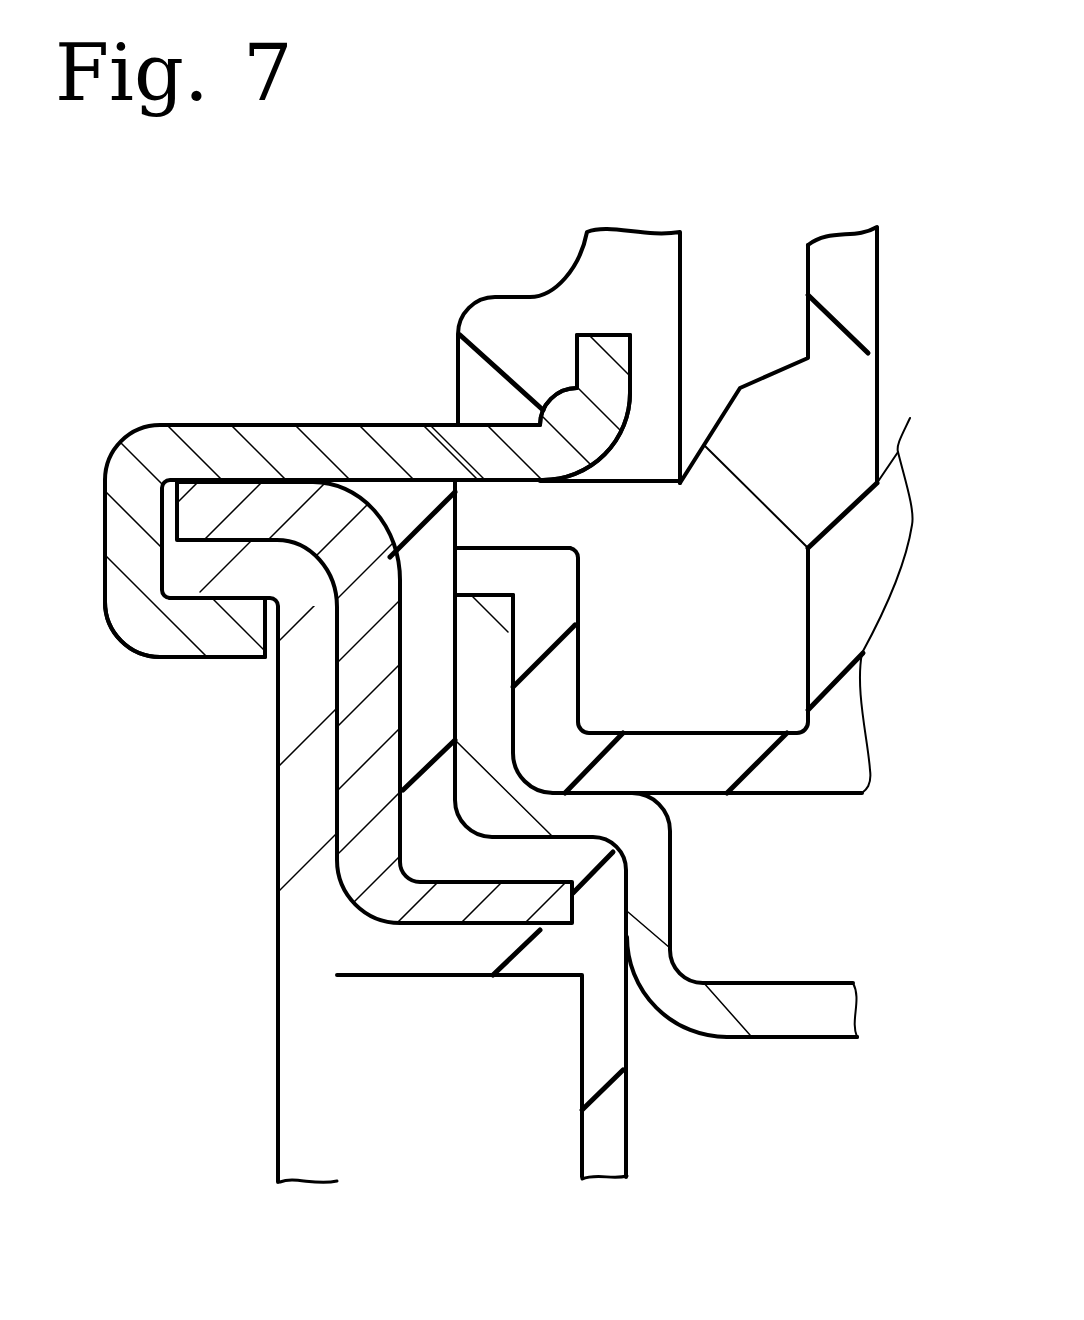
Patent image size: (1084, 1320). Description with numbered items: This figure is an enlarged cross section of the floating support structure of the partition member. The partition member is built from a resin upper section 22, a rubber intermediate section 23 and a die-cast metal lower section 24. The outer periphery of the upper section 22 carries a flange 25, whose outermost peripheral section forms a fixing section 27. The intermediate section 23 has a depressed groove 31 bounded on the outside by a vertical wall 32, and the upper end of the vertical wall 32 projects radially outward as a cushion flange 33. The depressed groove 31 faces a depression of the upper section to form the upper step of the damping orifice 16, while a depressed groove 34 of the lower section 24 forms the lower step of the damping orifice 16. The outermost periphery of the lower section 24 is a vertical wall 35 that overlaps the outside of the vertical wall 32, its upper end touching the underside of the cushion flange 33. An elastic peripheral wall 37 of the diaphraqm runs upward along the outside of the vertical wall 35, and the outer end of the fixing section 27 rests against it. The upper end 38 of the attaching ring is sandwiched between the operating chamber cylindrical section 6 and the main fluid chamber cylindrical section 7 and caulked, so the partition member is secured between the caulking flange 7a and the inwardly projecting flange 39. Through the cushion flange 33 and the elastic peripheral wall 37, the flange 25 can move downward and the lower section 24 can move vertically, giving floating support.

The operating chamber cylindrical section 6 is at (293, 997).
The main fluid chamber cylindrical section 7 is at (575, 390).
The caulking flange 7a is at (370, 437).
The damping orifice 16 is at (768, 668).
The upper section 22 is at (862, 366).
The intermediate section 23 is at (825, 808).
The lower section 24 is at (804, 1054).
The flange 25 is at (680, 533).
The fixing section 27 is at (475, 497).
The depressed groove 31 is at (697, 732).
The vertical wall 32 is at (565, 650).
The cushion flange 33 is at (475, 578).
The depressed groove 34 is at (741, 990).
The vertical wall 35 is at (482, 658).
The elastic peripheral wall 37 is at (422, 737).
The upper end 38 is at (207, 507).
The inwardly projecting flange 39 is at (510, 910).